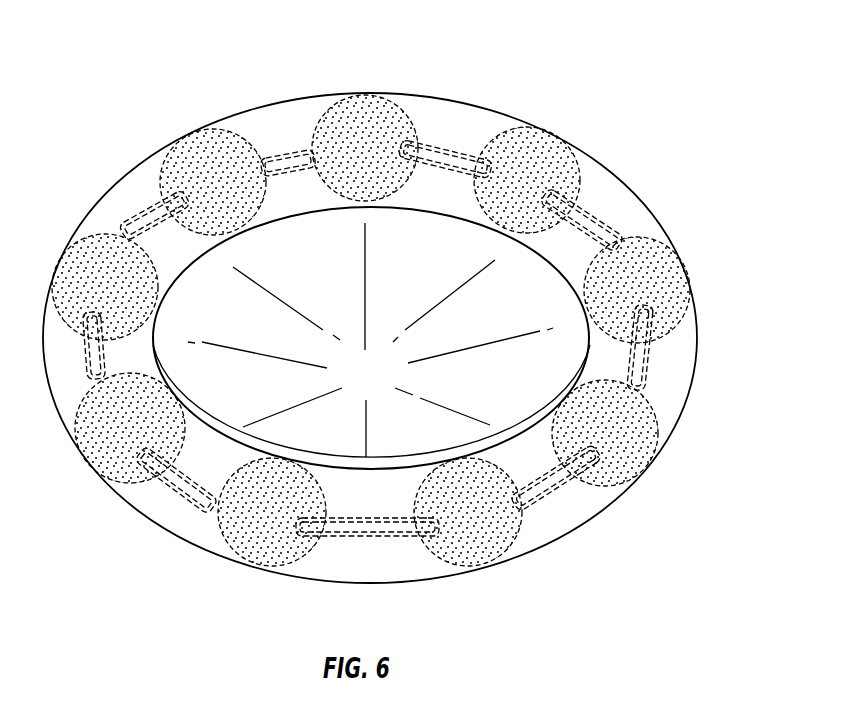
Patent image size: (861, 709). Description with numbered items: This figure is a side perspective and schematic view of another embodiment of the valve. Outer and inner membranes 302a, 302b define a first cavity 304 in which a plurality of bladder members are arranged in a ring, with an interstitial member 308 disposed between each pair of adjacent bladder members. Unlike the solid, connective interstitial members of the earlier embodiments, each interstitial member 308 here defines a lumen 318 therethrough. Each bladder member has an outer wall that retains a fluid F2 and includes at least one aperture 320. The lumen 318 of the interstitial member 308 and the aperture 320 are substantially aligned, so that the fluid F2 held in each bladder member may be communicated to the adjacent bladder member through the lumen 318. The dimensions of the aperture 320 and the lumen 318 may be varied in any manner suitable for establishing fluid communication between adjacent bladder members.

The first cavity 304 is at (473, 130).
The aperture 320 is at (413, 133).
The outer membrane 302a is at (593, 150).
The inner membrane 302b is at (565, 270).
The lumen 318 is at (160, 198).
The interstitial member 308 is at (125, 227).
The fluid F2 is at (635, 440).